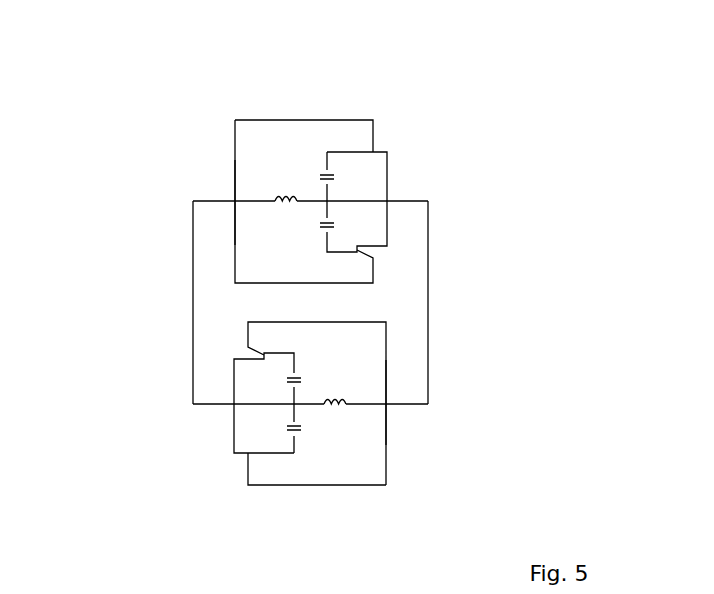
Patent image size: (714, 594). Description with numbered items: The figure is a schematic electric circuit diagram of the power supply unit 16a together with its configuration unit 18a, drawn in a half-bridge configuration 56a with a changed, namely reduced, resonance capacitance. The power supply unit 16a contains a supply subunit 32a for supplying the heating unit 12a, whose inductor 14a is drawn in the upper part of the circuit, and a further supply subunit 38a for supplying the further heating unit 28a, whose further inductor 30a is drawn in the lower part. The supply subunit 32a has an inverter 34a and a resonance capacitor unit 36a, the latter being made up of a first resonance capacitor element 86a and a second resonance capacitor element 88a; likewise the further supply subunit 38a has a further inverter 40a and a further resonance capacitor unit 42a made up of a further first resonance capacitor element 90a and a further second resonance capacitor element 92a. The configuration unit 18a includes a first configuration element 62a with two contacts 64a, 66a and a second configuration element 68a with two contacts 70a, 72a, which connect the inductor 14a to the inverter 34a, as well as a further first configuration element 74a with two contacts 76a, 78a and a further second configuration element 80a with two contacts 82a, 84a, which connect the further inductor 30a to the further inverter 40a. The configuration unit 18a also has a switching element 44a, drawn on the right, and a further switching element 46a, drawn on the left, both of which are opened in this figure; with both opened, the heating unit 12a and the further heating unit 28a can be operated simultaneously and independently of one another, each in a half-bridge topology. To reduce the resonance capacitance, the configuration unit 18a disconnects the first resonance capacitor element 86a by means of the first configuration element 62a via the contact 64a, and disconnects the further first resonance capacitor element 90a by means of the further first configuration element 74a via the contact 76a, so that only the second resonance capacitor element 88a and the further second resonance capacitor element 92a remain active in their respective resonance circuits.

The heating unit 12a is at (204, 96).
The inductor 14a is at (287, 194).
The power supply unit 16a is at (127, 196).
The configuration unit 18a is at (399, 112).
The further heating unit 28a is at (430, 469).
The further inductor 30a is at (386, 430).
The supply subunit 32a is at (170, 38).
The inverter 34a is at (230, 214).
The resonance capacitor unit 36a is at (285, 61).
The further supply subunit 38a is at (483, 481).
The further inverter 40a is at (395, 385).
The further resonance capacitor unit 42a is at (373, 530).
The switching element 44a is at (425, 313).
The further switching element 46a is at (196, 314).
The half-bridge configuration 56a is at (167, 276).
The first configuration element 62a is at (348, 150).
The contact 64a is at (358, 146).
The contact 66a is at (360, 156).
The second configuration element 68a is at (356, 250).
The contact 70a is at (368, 263).
The contact 72a is at (354, 246).
The further first configuration element 74a is at (271, 352).
The contact 76a is at (261, 346).
The contact 78a is at (264, 356).
The further second configuration element 80a is at (268, 459).
The contact 82a is at (272, 454).
The contact 84a is at (262, 452).
The first resonance capacitor element 86a is at (326, 151).
The second resonance capacitor element 88a is at (325, 201).
The further first resonance capacitor element 90a is at (334, 405).
The further second resonance capacitor element 92a is at (294, 405).